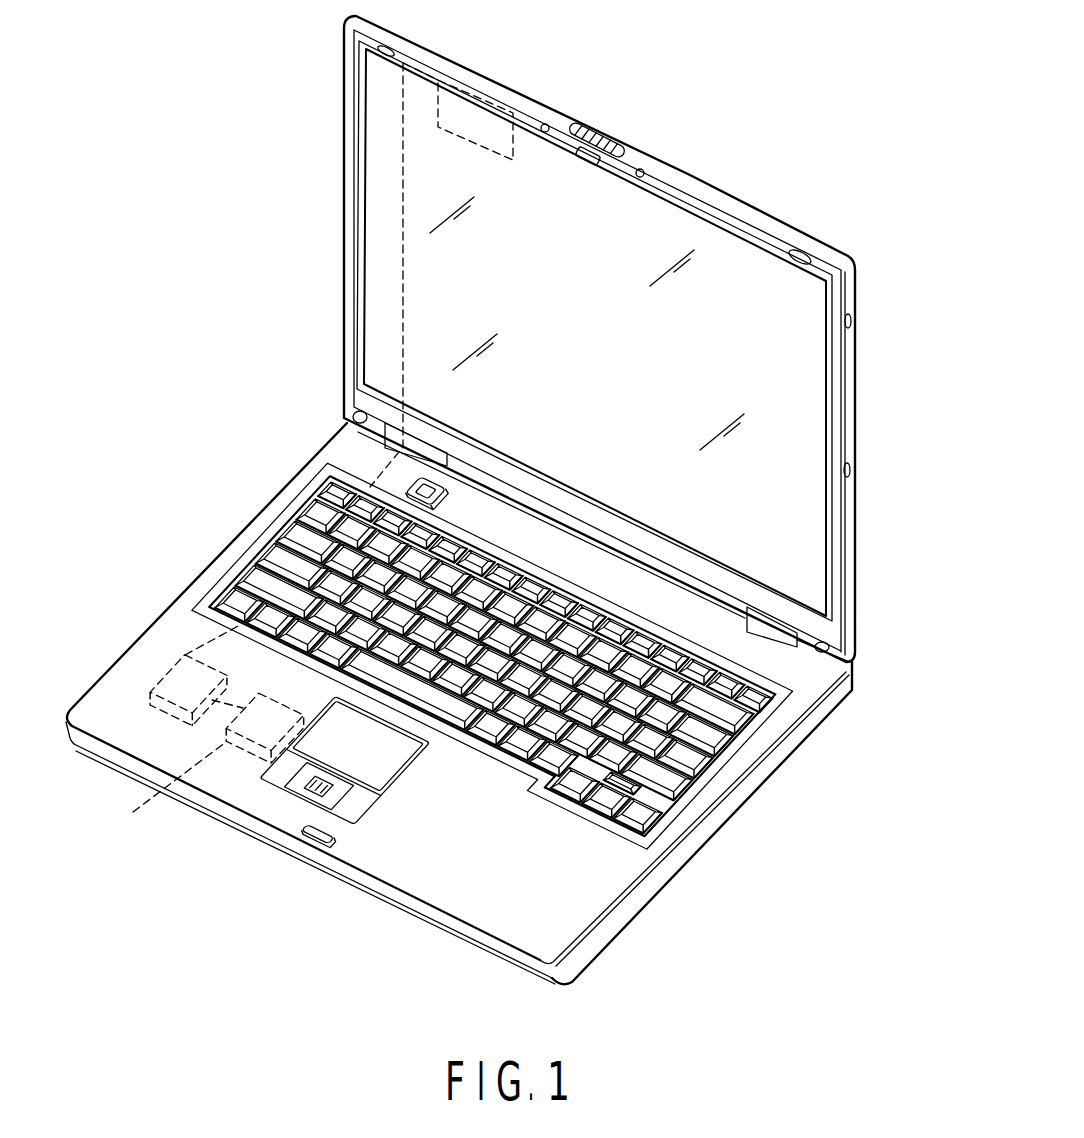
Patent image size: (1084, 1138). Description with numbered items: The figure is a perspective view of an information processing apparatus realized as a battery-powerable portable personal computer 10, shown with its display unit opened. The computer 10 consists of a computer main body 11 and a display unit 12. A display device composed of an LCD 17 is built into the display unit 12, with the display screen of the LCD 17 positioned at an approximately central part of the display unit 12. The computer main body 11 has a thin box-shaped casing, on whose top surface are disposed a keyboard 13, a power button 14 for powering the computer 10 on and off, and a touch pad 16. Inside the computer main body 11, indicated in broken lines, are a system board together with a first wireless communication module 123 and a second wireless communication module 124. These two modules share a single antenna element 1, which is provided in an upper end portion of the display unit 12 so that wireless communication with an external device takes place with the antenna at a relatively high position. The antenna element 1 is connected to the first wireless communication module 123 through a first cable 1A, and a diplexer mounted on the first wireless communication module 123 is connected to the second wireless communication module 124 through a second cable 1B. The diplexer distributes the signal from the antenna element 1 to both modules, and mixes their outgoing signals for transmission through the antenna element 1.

The antenna element 1 is at (476, 80).
The first cable 1A is at (403, 163).
The second cable 1B is at (173, 795).
The portable personal computer 10 is at (494, 495).
The computer main body 11 is at (632, 927).
The display unit 12 is at (849, 499).
The keyboard 13 is at (640, 768).
The power button 14 is at (412, 483).
The touch pad 16 is at (331, 752).
The LCD 17 is at (806, 356).
The first wireless communication module 123 is at (176, 664).
The second wireless communication module 124 is at (238, 758).